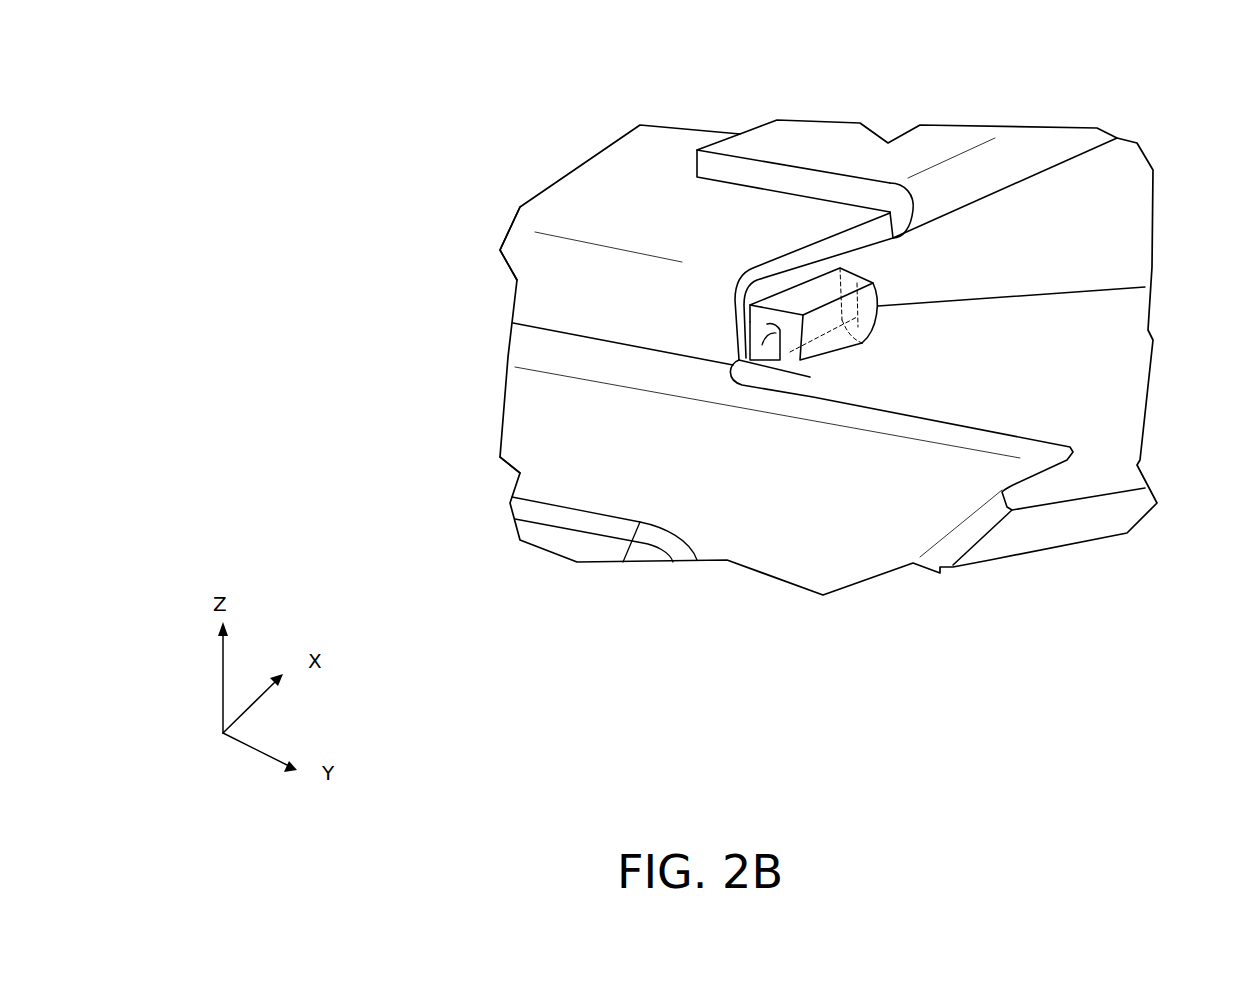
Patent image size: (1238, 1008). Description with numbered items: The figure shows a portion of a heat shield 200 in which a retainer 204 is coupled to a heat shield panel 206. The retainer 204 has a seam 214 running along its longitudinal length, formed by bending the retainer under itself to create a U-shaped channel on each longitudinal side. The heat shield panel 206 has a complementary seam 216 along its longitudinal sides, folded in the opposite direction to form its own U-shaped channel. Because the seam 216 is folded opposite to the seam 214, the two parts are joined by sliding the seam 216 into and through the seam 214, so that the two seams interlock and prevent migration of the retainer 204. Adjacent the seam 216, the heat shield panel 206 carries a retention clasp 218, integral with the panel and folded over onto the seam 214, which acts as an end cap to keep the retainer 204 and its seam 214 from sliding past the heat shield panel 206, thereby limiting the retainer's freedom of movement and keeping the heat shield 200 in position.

The heat shield 200 is at (412, 127).
The retainer 204 is at (662, 162).
The heat shield panel 206 is at (525, 462).
The seam 214 is at (533, 273).
The seam 216 is at (855, 299).
The retention clasp 218 is at (840, 327).